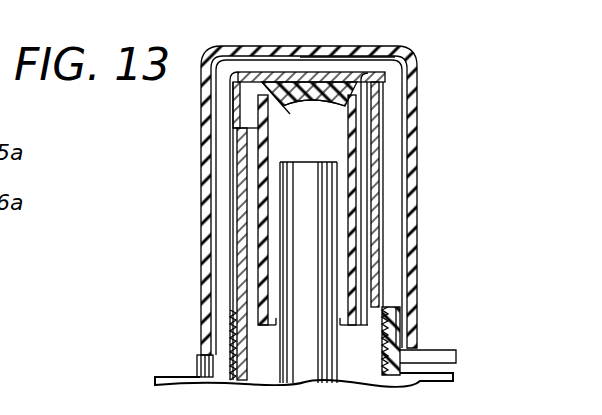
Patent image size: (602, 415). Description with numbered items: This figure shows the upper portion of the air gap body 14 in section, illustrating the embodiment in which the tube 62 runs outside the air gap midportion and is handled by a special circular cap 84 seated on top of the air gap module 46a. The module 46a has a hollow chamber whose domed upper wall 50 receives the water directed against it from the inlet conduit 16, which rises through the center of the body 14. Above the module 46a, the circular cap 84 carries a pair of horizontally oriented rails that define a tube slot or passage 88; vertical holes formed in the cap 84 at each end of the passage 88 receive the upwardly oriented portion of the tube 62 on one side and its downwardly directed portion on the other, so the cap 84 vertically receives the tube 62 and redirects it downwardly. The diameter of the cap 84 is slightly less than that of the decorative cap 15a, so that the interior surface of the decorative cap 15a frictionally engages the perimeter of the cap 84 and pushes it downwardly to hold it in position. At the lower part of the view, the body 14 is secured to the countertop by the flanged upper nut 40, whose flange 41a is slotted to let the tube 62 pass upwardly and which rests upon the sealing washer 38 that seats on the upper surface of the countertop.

The air gap body 14 is at (193, 333).
The decorative cap 15a is at (415, 110).
The inlet conduit 16 is at (313, 243).
The sealing washer 38 is at (405, 368).
The flanged upper nut 40 is at (388, 307).
The flange of clamp nut 41a is at (440, 350).
The air gap module 46a is at (343, 89).
The domed upper wall 50 is at (303, 106).
The tube 62 is at (344, 52).
The circular cap 84 is at (266, 80).
The tube slot or passage 88 is at (298, 80).